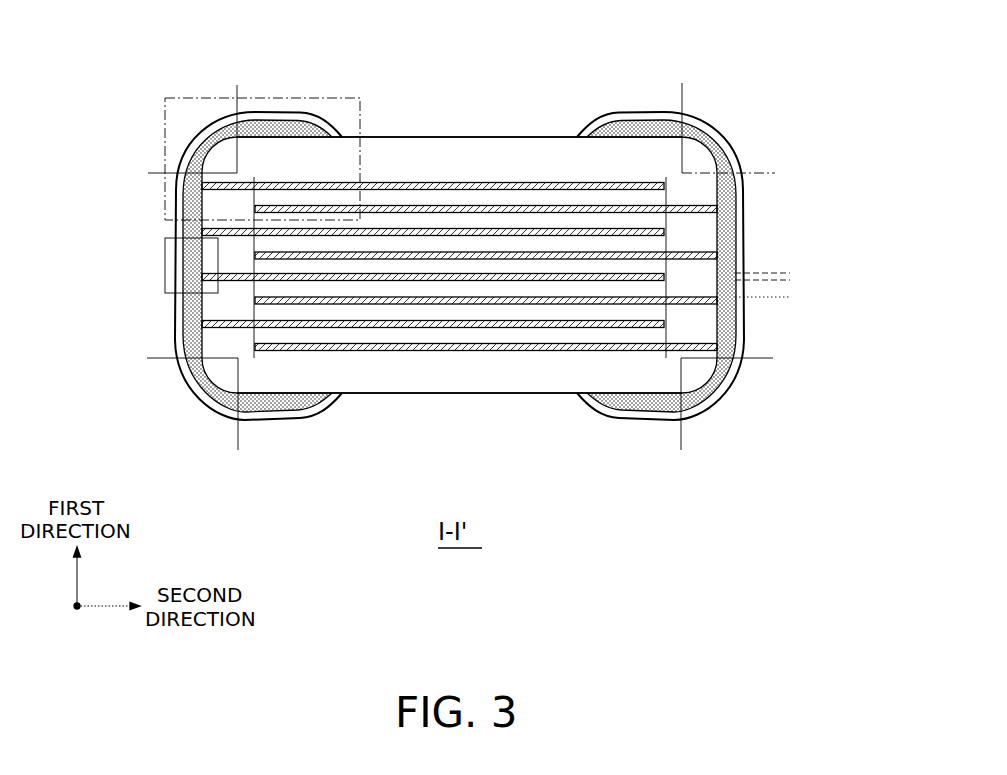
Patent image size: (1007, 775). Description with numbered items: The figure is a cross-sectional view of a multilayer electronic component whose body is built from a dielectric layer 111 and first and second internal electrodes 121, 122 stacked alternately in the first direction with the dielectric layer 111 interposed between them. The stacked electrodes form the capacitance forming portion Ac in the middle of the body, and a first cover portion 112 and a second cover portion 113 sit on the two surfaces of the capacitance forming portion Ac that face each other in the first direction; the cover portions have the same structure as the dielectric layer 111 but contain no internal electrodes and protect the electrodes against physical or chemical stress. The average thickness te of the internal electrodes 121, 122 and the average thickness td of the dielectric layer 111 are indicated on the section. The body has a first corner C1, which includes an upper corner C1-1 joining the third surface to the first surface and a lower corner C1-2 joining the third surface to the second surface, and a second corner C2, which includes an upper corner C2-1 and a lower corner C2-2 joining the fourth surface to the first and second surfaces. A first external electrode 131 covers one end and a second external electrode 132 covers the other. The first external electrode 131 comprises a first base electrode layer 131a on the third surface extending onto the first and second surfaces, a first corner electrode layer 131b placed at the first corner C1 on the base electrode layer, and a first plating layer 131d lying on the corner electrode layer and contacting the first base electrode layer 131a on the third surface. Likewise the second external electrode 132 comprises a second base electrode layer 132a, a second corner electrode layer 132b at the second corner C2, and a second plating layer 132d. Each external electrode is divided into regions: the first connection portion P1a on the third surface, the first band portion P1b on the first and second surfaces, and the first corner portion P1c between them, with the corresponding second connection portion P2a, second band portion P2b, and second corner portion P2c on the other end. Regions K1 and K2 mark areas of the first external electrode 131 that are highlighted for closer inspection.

The dielectric layer 111 is at (480, 200).
The first cover portion 112 is at (510, 157).
The second cover portion 113 is at (430, 380).
The capacitance forming portion Ac is at (490, 352).
The first internal electrode 121 is at (420, 182).
The second internal electrode 122 is at (450, 205).
The first external electrode 131 is at (191, 266).
The first base electrode layer 131a is at (193, 245).
The first corner electrode layer 131b is at (187, 190).
The first plating layer 131d is at (85, 253).
The second external electrode 132 is at (729, 266).
The second base electrode layer 132a is at (730, 245).
The second corner electrode layer 132b is at (736, 190).
The second plating layer 132d is at (828, 253).
The first connection portion P1a is at (153, 328).
The first band portion P1b is at (278, 102).
The first corner portion P1c is at (183, 127).
The second connection portion P2a is at (765, 329).
The second band portion P2b is at (641, 102).
The second corner portion P2c is at (734, 120).
The 1-1 corner C1-1 is at (222, 150).
The 1-2 corner C1-2 is at (222, 385).
The 2-1 corner C2-1 is at (697, 150).
The 2-2 corner C2-2 is at (697, 385).
The first corner C1 is at (595, 575).
The second corner C2 is at (732, 575).
The enlarged region K1 is at (325, 98).
The enlarged region K2 is at (165, 265).
The average thickness of the internal electrodes te is at (786, 262).
The average thickness of the dielectric layer td is at (786, 310).